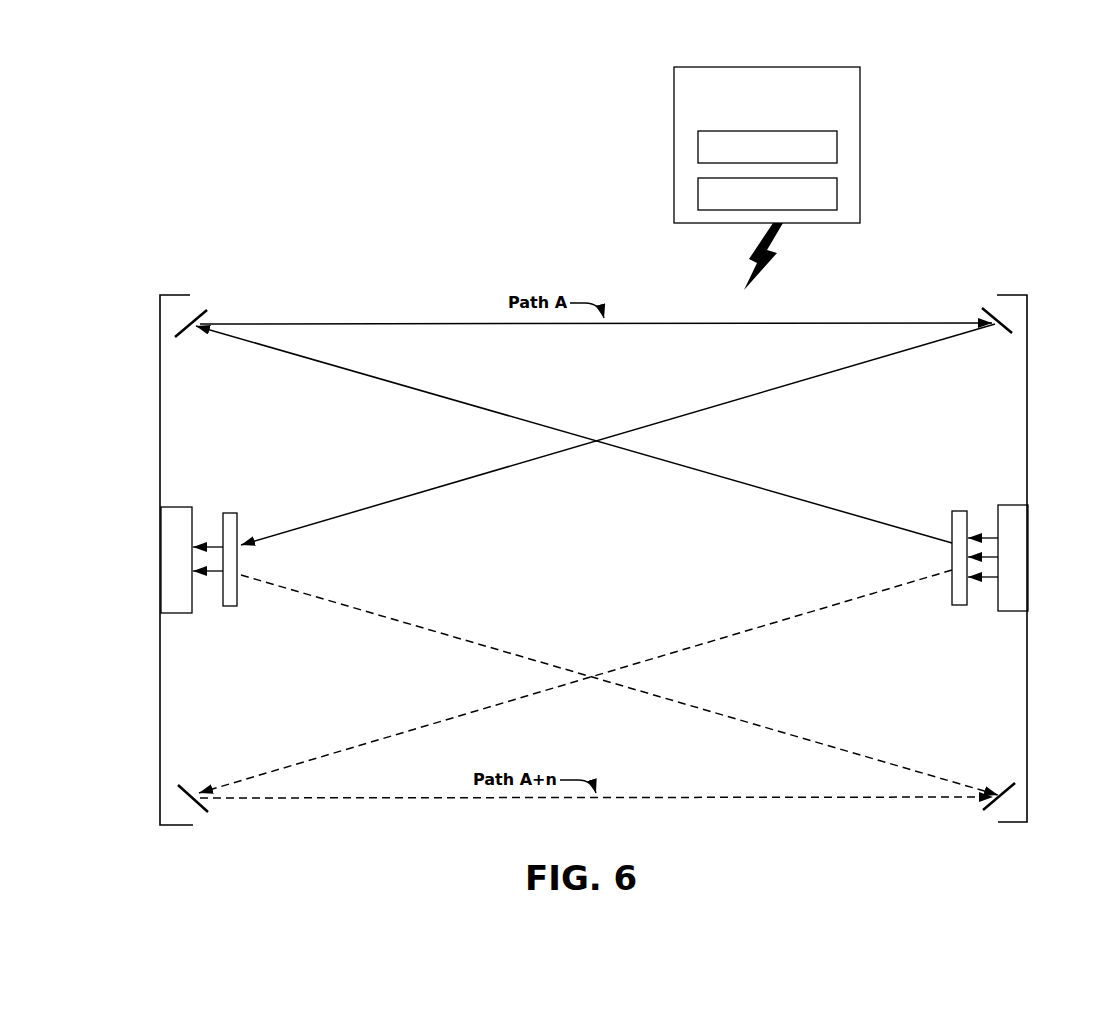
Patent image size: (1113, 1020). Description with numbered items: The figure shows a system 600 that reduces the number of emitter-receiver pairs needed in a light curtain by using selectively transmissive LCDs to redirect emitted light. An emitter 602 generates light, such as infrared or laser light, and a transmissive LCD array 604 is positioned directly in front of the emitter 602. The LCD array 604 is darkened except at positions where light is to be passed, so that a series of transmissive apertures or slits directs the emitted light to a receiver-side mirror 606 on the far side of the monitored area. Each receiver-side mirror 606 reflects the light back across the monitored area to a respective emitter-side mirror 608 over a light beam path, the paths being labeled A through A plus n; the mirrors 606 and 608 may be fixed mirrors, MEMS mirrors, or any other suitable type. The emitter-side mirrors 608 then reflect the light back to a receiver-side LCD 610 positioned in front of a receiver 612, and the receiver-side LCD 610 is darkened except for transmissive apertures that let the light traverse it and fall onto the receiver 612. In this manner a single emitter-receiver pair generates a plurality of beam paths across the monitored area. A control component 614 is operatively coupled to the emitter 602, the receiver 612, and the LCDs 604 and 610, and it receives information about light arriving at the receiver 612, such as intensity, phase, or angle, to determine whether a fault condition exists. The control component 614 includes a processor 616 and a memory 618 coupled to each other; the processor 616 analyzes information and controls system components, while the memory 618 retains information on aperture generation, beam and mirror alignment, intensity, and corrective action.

The system 600 is at (186, 127).
The emitter 602 is at (1022, 556).
The transmissive LCD array 604 is at (952, 522).
The receiver-side mirror 606 is at (184, 322).
The emitter-side mirror 608 is at (1010, 325).
The receiver-side LCD 610 is at (238, 522).
The receiver 612 is at (170, 553).
The control component 614 is at (861, 103).
The processor 616 is at (698, 148).
The memory 618 is at (698, 192).